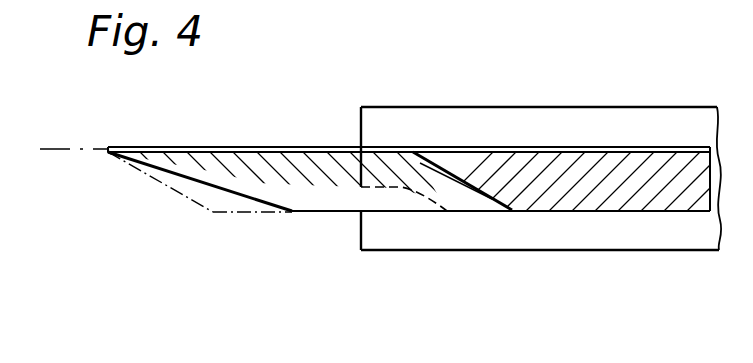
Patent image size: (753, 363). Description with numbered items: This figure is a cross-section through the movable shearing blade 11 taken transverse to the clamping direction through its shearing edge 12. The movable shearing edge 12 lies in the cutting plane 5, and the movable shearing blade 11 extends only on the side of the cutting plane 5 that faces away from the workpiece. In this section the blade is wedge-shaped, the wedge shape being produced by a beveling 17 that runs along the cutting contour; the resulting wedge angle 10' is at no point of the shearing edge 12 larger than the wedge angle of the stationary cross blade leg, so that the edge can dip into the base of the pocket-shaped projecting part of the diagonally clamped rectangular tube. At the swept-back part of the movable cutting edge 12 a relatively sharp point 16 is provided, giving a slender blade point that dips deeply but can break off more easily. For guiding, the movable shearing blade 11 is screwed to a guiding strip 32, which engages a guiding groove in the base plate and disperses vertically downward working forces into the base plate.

The cutting plane 5 is at (67, 147).
The movable shearing edge 12 is at (193, 147).
The point 16 is at (108, 153).
The beveling 17 is at (278, 178).
The wedge angle 10' is at (445, 134).
The movable shearing blade 11 is at (613, 132).
The guiding strip 32 is at (473, 235).